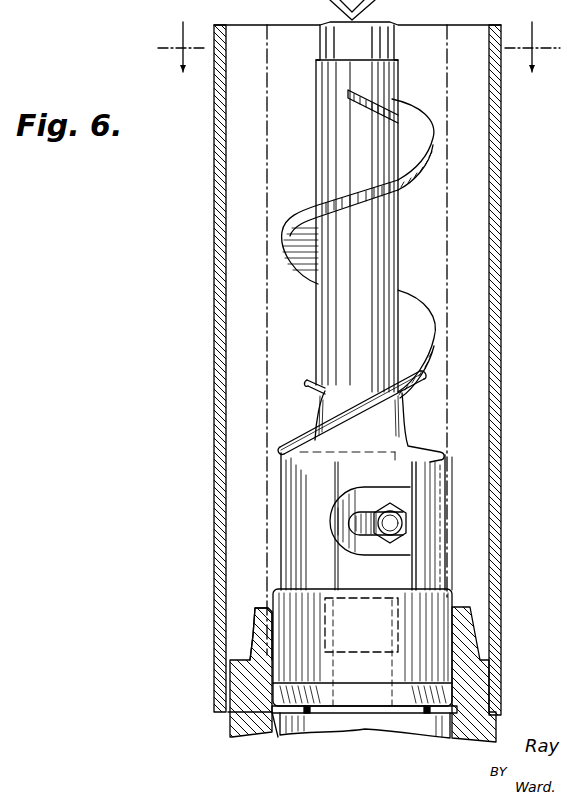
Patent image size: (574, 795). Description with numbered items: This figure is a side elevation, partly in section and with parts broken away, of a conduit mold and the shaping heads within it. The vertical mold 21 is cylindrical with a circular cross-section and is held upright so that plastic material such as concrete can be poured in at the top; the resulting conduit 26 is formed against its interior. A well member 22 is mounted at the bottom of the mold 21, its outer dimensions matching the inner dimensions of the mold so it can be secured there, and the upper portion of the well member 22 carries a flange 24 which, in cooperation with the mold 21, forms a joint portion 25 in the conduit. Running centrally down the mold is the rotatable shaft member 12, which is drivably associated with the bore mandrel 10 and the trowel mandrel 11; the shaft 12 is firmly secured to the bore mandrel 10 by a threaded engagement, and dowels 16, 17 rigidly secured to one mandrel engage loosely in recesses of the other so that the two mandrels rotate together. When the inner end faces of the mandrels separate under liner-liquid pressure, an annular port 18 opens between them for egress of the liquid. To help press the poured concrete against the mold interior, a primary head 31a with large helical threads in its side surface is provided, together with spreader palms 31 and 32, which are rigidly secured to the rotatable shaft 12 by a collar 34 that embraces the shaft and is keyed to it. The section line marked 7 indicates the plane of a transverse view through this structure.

The section line 7- 7 is at (359, 61).
The bore mandrel 10 is at (286, 597).
The trowel mandrel 11 is at (368, 728).
The shaft member 12 is at (401, 252).
The dowel 16 is at (428, 714).
The dowel 17 is at (306, 714).
The annular port 18 is at (230, 716).
The vertical mold 21 is at (213, 270).
The well member 22 is at (258, 687).
The flange 24 is at (462, 620).
The joint portion 25 is at (250, 642).
The conduit 26 is at (258, 541).
The spreader palm 31 is at (405, 389).
The primary head 31a is at (428, 338).
The spreader palm 32 is at (440, 452).
The collar 34 is at (417, 509).